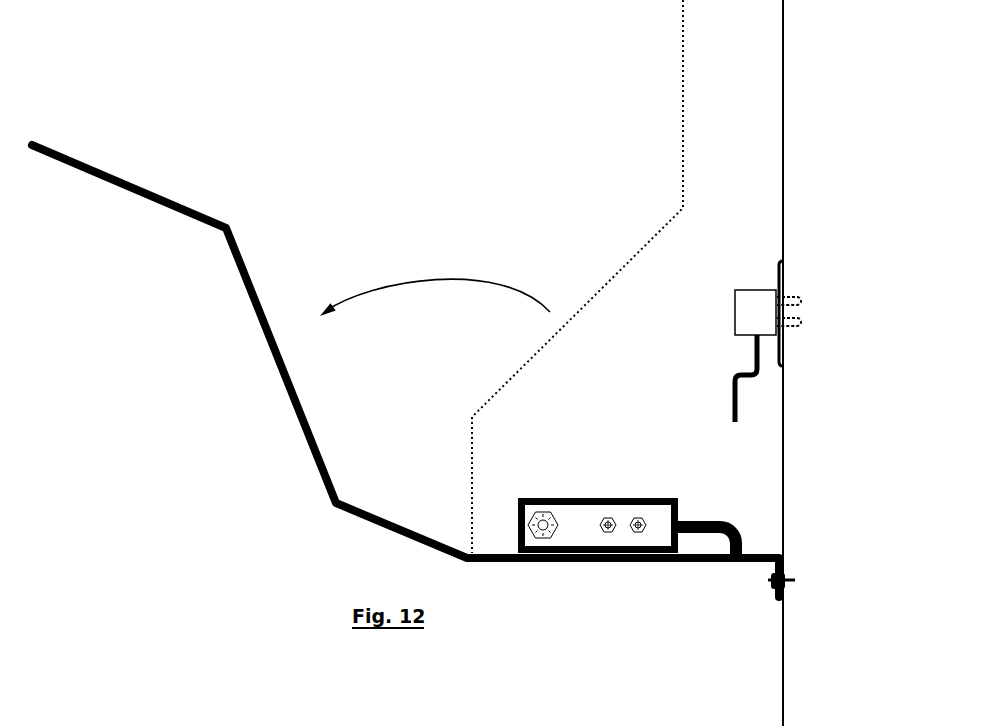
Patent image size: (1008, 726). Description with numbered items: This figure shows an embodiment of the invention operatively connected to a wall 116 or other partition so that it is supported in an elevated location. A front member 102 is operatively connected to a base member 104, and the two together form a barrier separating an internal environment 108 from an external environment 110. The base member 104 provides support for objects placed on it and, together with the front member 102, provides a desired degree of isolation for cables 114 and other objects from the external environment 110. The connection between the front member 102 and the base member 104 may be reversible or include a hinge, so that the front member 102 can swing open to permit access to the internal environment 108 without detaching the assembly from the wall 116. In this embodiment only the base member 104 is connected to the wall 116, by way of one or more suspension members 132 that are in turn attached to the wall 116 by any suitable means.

The front member 102 is at (672, 151).
The base member 104 is at (648, 560).
The internal environment 108 is at (682, 427).
The external environment 110 is at (187, 355).
The cables 114 is at (736, 527).
The wall 116 is at (786, 383).
The suspension member 132 is at (785, 563).